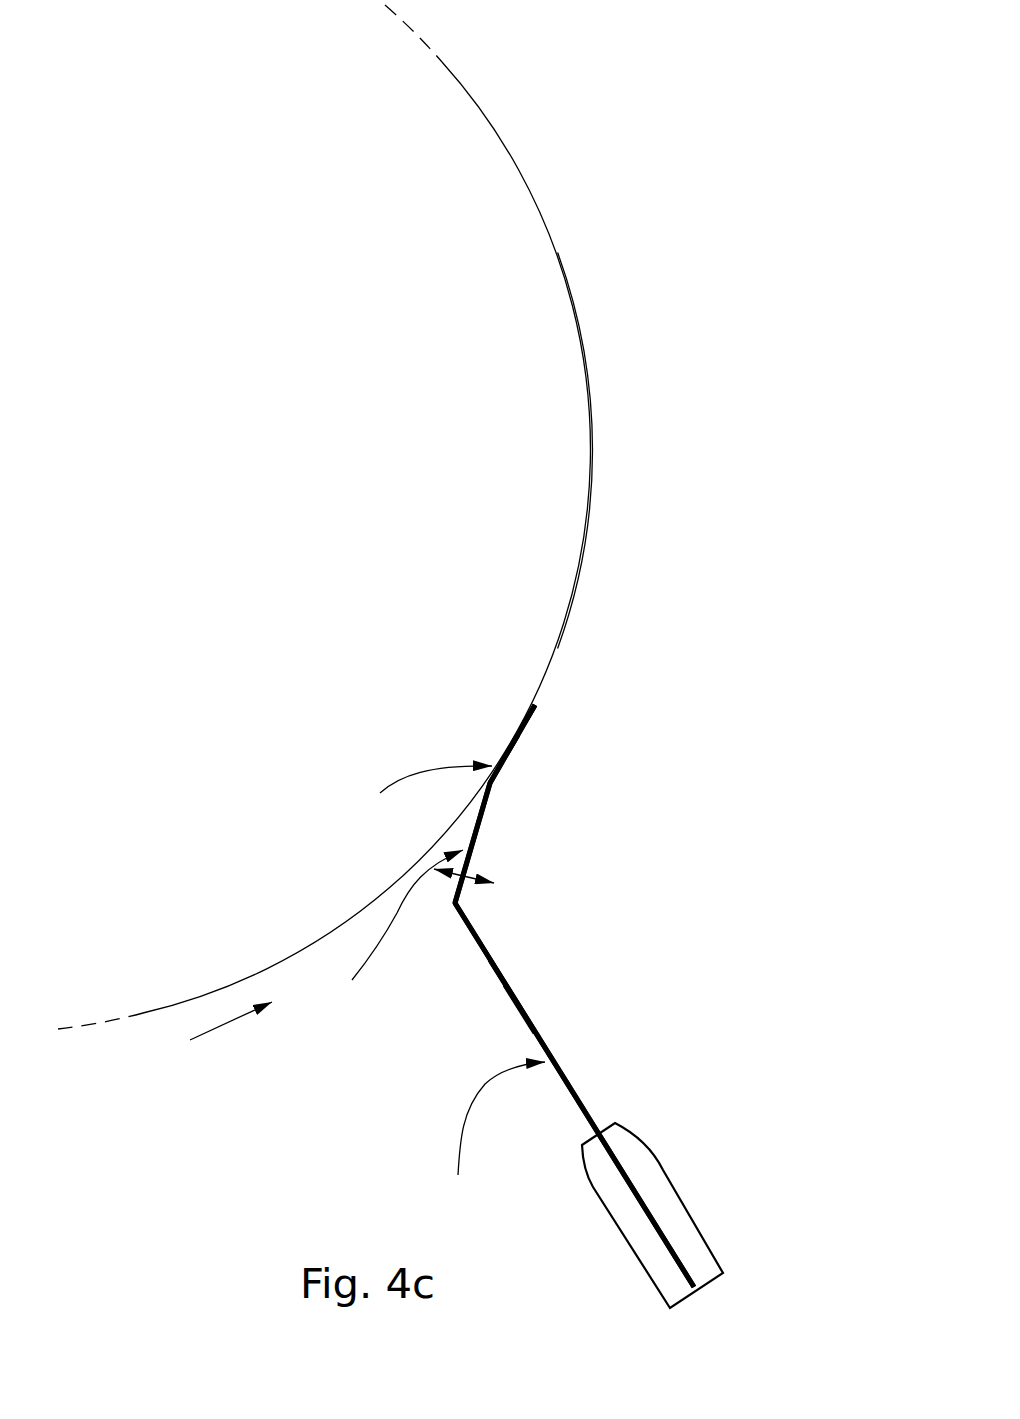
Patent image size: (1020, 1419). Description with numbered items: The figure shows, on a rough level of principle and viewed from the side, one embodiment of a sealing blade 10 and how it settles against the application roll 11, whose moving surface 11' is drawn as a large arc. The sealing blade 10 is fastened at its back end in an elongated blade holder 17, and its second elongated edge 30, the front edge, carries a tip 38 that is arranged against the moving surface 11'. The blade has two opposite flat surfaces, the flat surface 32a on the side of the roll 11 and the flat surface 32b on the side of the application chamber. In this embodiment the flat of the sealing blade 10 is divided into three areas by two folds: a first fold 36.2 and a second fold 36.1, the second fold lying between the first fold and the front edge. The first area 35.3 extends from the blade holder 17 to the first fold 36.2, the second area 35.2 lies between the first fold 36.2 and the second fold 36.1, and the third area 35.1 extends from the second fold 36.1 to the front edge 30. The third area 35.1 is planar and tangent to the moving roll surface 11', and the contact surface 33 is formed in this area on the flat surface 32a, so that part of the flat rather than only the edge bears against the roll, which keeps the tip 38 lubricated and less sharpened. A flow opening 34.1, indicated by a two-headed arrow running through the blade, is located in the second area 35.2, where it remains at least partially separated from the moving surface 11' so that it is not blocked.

The sealing blade 10 is at (607, 996).
The roll 11 is at (324, 522).
The moving surface 11' is at (640, 451).
The blade holder 17 is at (668, 1160).
The second elongated edge 30 is at (540, 709).
The flat surface 32a is at (518, 1006).
The flat surface 32b is at (513, 990).
The contact surface 33 is at (513, 742).
The flow opening 34.1 is at (482, 866).
The third area 35.1 is at (405, 798).
The second area 35.2 is at (387, 933).
The first area 35.3 is at (486, 1139).
The second fold 36.1 is at (492, 790).
The first fold 36.2 is at (456, 904).
The tip 38 is at (535, 708).